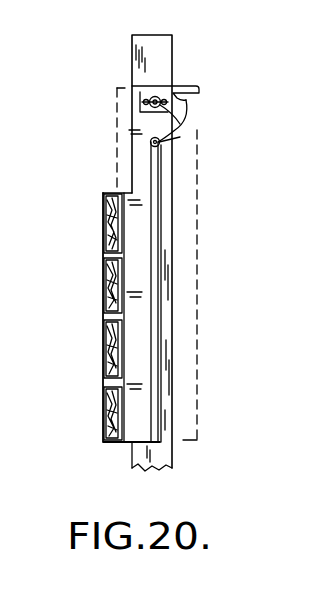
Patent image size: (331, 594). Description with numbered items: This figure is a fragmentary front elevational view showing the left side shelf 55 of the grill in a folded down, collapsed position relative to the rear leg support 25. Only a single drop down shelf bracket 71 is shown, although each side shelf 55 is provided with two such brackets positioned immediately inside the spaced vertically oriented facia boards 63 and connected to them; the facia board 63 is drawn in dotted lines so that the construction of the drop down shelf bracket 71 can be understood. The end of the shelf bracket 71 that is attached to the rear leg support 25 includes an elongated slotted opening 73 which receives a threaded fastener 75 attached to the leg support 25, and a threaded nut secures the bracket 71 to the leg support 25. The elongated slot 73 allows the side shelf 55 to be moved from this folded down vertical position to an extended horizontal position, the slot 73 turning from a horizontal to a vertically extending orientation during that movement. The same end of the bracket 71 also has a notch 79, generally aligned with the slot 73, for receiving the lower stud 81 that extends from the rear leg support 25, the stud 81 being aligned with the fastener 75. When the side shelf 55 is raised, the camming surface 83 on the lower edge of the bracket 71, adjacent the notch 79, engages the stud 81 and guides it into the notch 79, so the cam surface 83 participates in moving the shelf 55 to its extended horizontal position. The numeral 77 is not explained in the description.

The rear leg support 25 is at (172, 453).
The left side shelf 55 is at (102, 243).
The facia board 63 is at (202, 297).
The drop down shelf bracket 71 is at (146, 256).
The slotted opening 73 is at (143, 96).
The threaded fastener 75 is at (157, 99).
The washer 77 is at (150, 106).
The notch 79 is at (195, 99).
The lower stud 81 is at (180, 135).
The camming surface 83 is at (190, 117).